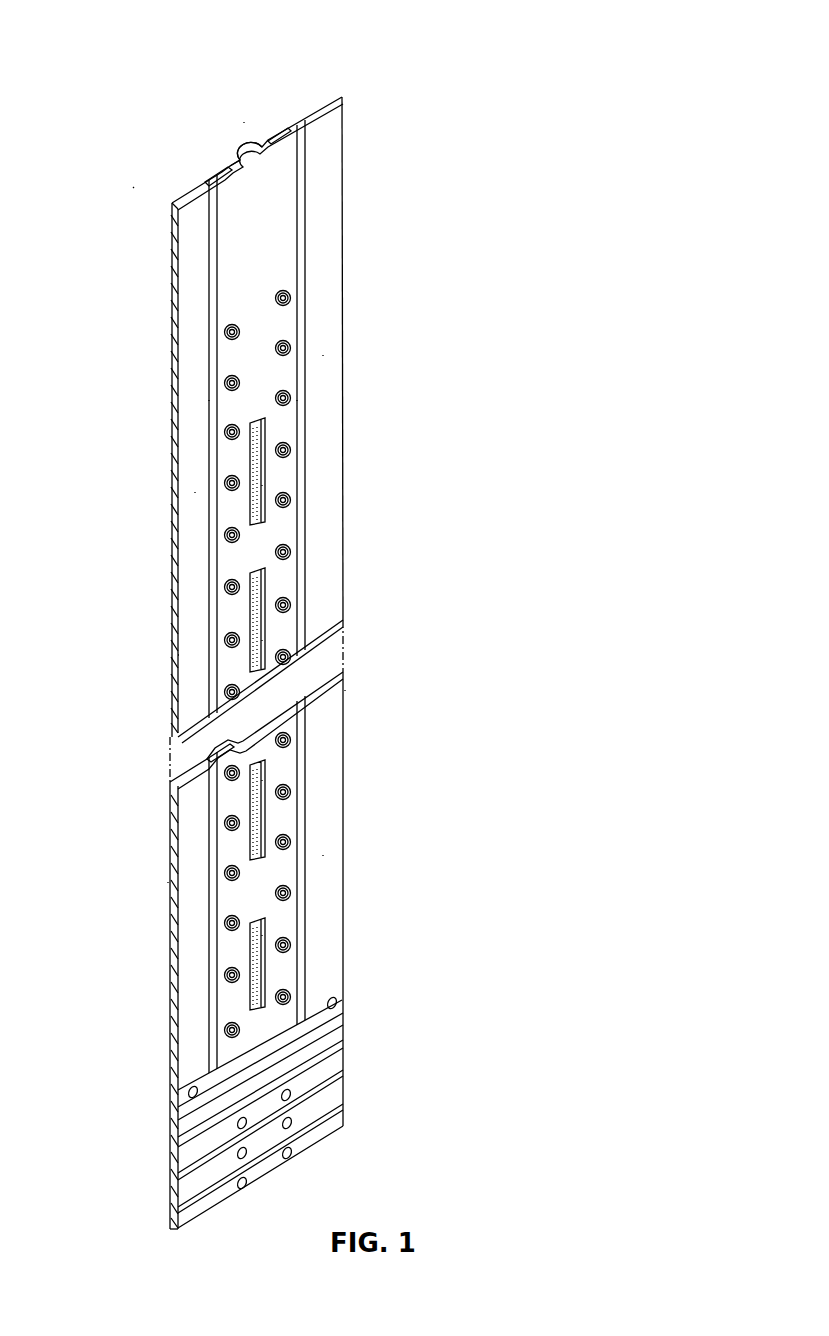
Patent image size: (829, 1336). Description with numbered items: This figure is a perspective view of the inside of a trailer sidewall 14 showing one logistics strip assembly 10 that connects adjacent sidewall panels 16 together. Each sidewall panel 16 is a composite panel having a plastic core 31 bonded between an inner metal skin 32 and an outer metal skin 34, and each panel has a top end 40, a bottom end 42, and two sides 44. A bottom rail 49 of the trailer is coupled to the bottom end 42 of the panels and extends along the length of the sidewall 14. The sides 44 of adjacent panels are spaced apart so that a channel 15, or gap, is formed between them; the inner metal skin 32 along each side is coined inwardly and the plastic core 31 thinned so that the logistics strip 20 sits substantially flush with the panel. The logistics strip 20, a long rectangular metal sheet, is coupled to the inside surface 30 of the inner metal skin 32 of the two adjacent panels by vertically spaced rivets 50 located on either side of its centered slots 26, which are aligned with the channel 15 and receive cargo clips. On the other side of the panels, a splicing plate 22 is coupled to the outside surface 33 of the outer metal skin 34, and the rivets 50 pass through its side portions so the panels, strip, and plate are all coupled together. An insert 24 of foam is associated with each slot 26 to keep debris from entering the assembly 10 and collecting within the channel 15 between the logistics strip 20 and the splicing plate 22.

The logistics strip assembly 10 is at (244, 120).
The sidewall 14 is at (133, 187).
The channel 15 is at (244, 148).
The sidewall panel 16 is at (360, 136).
The logistics strip 20 is at (280, 240).
The splicing plate 22 is at (222, 160).
The insert 24 is at (262, 435).
The slot 26 is at (262, 485).
The inside surface 30 is at (208, 342).
The plastic core 31 is at (178, 655).
The inner metal skin 32 is at (323, 355).
The outside surface 33 is at (320, 100).
The outer metal skin 34 is at (345, 690).
The top end 40 is at (170, 218).
The bottom end 42 is at (157, 1207).
The side 44 is at (220, 158).
The bottom rail 49 is at (345, 1060).
The rivet 50 is at (292, 298).